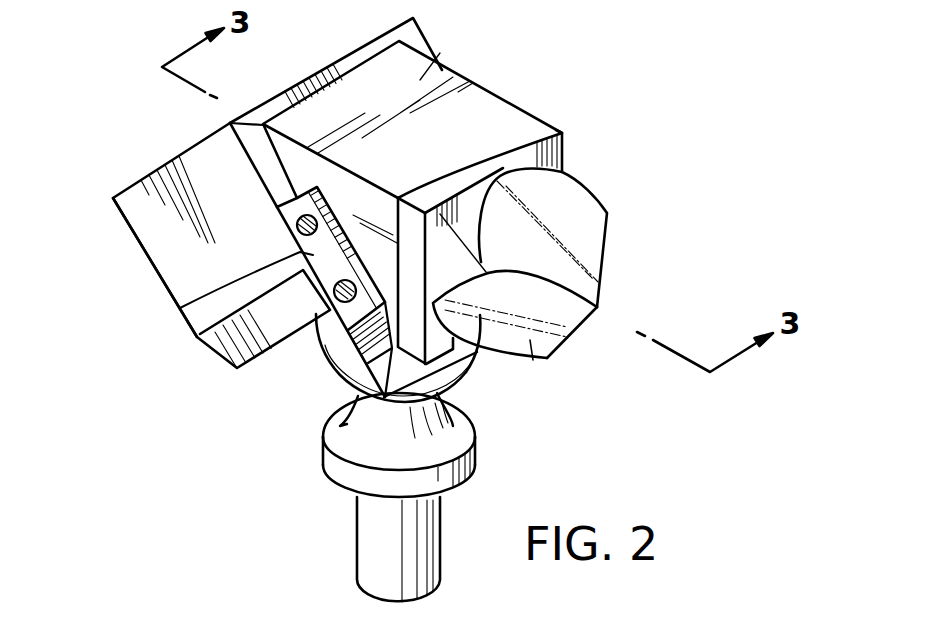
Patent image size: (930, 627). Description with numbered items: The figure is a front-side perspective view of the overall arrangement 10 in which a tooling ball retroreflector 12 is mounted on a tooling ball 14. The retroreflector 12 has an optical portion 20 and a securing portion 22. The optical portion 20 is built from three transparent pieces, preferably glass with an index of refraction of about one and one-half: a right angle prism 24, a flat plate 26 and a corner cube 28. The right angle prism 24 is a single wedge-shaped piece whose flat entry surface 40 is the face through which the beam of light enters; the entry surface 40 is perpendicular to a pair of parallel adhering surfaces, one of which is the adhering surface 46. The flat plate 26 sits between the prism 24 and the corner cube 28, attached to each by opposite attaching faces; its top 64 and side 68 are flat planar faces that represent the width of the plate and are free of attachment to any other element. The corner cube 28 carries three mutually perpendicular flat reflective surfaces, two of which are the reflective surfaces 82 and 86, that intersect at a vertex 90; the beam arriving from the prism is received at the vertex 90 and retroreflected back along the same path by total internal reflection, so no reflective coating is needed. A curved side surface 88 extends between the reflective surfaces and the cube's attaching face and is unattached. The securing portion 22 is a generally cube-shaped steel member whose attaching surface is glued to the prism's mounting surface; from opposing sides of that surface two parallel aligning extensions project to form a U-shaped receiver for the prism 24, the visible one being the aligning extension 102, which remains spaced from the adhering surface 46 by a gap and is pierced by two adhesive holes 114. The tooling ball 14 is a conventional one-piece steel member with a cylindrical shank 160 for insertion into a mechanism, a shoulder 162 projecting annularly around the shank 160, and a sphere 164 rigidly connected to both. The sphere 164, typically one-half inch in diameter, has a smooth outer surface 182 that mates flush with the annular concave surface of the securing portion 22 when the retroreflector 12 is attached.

The retroreflector assembly 10 is at (648, 70).
The tooling ball retroreflector 12 is at (130, 170).
The tooling ball 14 is at (496, 463).
The optical portion 20 is at (497, 98).
The securing portion 22 is at (138, 243).
The right angle prism 24 is at (433, 55).
The flat plate 26 is at (565, 134).
The corner cube 28 is at (597, 200).
The entry surface 40 is at (367, 84).
The adhering surface 46 is at (283, 146).
The top 64 is at (533, 140).
The side 68 is at (340, 386).
The reflective surface 82 is at (580, 227).
The reflective surface 86 is at (533, 363).
The curved side surface 88 is at (505, 266).
The vertex 90 is at (598, 308).
The aligning extension 102 is at (182, 306).
The adhesive holes 114 is at (297, 227).
The shank 160 is at (357, 535).
The shoulder 162 is at (322, 455).
The sphere 164 is at (333, 407).
The outer surface 182 is at (470, 385).